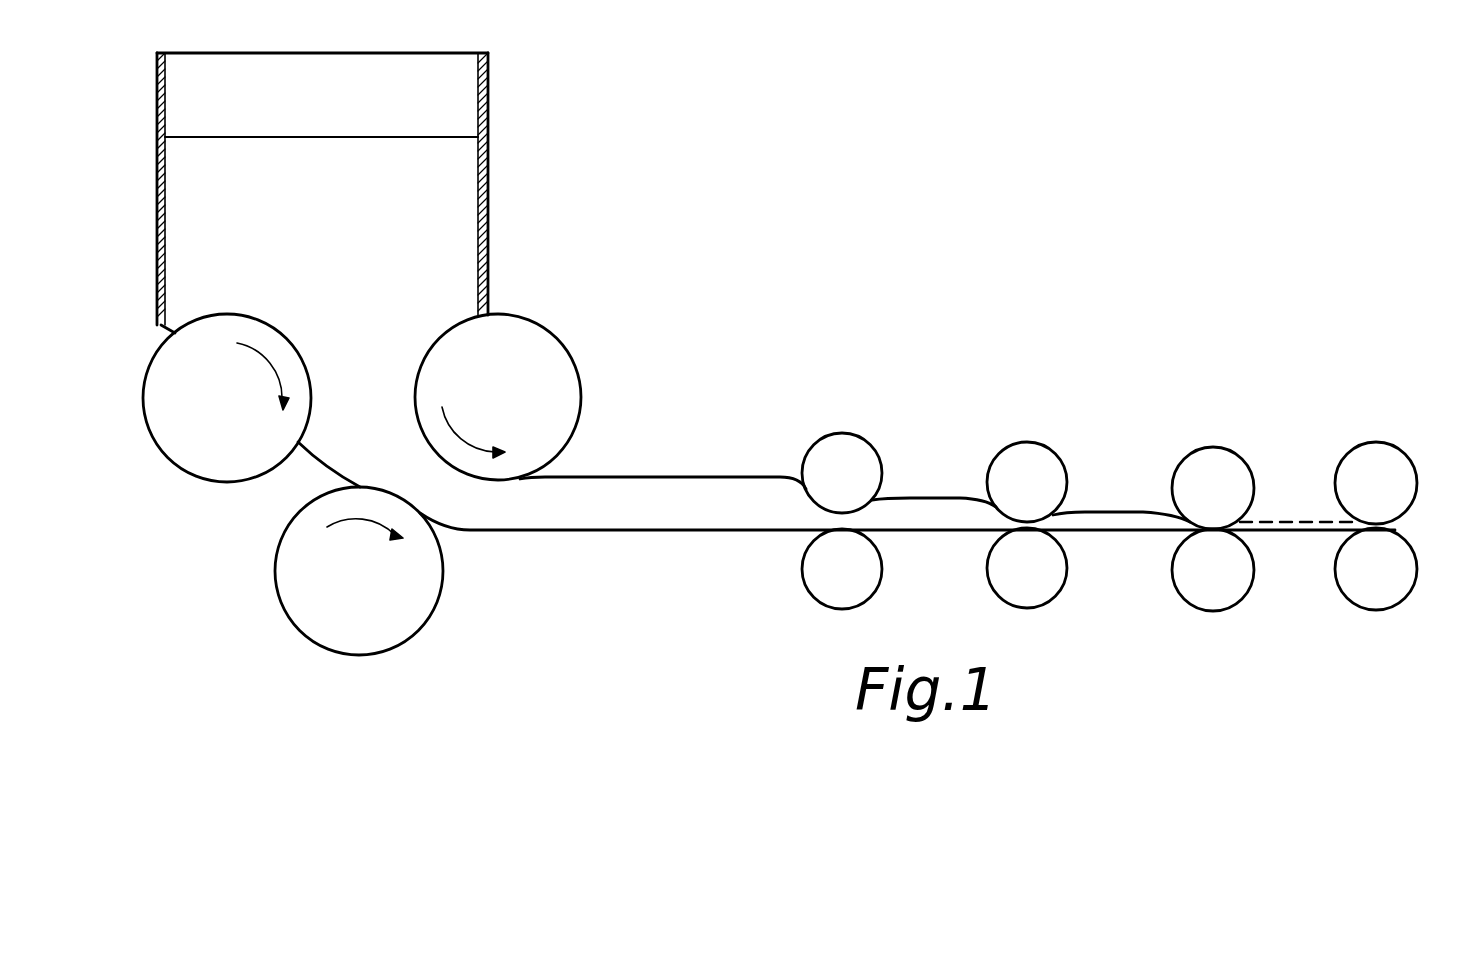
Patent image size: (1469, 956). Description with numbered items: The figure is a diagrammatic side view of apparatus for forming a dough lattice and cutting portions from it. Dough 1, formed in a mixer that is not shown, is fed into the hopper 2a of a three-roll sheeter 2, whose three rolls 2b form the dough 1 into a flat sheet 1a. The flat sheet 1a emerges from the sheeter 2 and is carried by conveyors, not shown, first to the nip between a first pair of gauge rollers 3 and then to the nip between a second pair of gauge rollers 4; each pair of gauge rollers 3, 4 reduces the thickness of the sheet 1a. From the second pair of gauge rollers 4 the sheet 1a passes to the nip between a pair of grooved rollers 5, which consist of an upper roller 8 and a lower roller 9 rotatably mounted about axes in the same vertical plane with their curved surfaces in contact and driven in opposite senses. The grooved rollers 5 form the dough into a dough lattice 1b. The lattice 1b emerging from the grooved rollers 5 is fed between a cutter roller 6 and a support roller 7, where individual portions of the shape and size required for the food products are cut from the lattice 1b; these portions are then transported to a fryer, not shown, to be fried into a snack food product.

The dough 1 is at (465, 210).
The flat sheet 1a is at (670, 493).
The dough lattice 1b is at (1290, 527).
The three-roll sheeter 2 is at (364, 193).
The hopper 2a is at (487, 97).
The rolls 2b is at (567, 370).
The first pair of gauge rollers 3 is at (867, 460).
The second pair of gauge rollers 4 is at (1048, 463).
The pair of grooved rollers 5 is at (1196, 489).
The cutter roller 6 is at (1403, 467).
The support roller 7 is at (1402, 570).
The upper roller 8 is at (1193, 467).
The lower roller 9 is at (1178, 563).